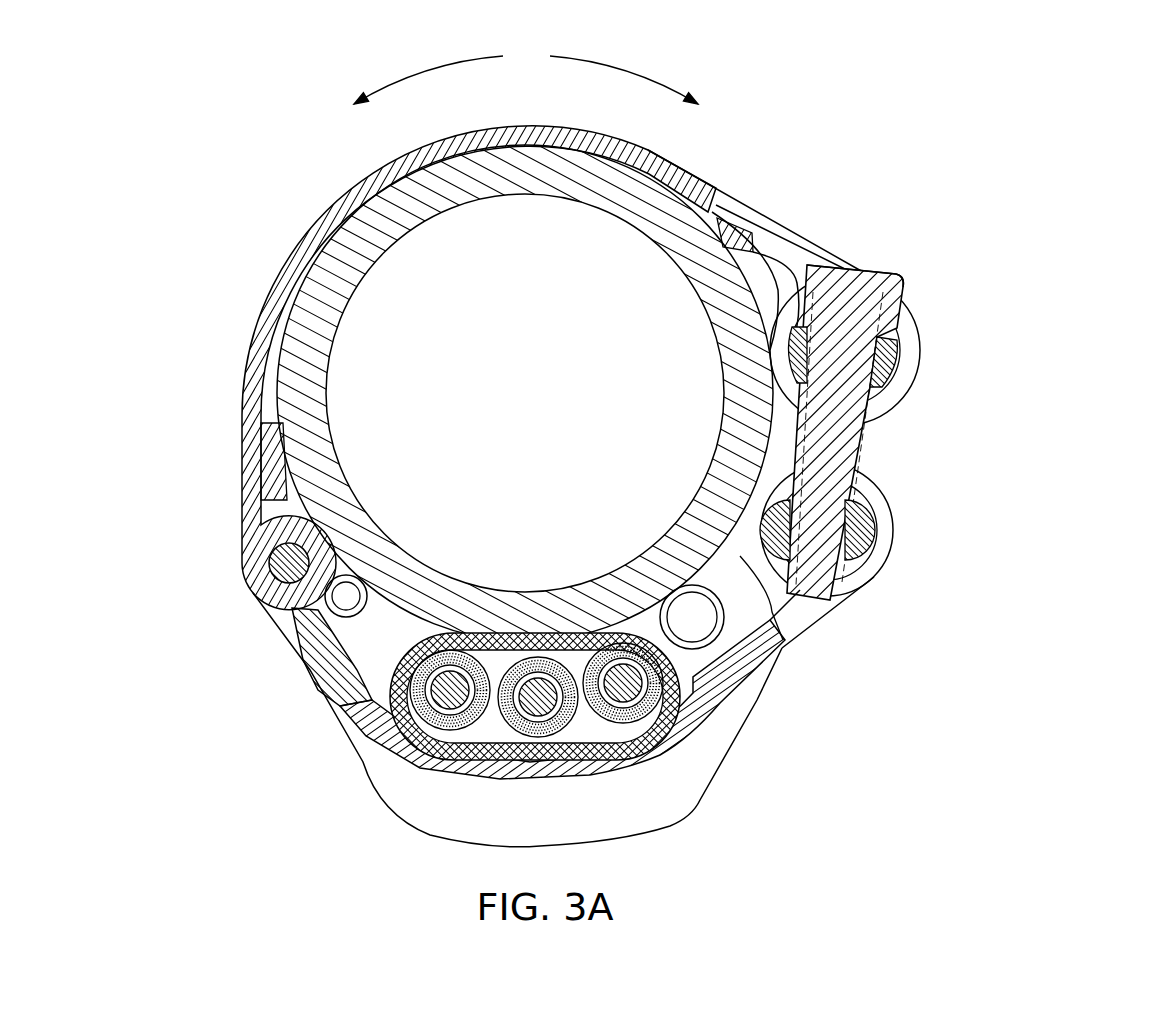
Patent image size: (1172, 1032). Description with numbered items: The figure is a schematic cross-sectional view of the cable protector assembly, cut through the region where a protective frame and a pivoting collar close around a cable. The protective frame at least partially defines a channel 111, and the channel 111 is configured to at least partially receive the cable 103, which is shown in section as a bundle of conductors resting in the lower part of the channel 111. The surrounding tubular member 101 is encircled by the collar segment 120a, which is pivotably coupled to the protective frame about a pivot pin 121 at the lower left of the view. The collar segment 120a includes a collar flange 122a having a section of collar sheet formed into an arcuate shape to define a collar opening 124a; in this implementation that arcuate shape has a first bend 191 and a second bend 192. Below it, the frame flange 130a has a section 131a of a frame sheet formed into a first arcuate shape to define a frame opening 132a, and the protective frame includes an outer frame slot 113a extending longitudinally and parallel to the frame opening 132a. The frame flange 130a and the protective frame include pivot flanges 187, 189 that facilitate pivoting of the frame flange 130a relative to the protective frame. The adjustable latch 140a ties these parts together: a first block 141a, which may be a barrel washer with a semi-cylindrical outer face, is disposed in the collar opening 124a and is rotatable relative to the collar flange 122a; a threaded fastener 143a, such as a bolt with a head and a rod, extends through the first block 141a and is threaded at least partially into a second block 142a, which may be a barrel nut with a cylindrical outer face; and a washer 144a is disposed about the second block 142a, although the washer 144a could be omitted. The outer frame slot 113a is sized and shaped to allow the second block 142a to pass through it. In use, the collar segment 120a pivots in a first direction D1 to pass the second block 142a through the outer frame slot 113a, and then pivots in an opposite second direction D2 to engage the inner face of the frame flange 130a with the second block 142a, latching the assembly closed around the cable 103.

The tubular body 101 is at (466, 178).
The cable 103 is at (475, 748).
The channel 111 is at (378, 650).
The outer frame slot 113a is at (862, 574).
The collar segment 120a is at (287, 258).
The pivot pin 121 is at (290, 567).
The collar flange 122a is at (930, 372).
The collar opening 124a is at (922, 332).
The frame flange 130a is at (895, 560).
The section of a frame sheet 131a is at (893, 515).
The frame opening 132a is at (768, 548).
The adjustable latch 140a is at (872, 455).
The first block 141a is at (797, 357).
The second block 142a is at (778, 528).
The threaded fastener 143a is at (857, 285).
The washer 144a is at (805, 566).
The pivot flange 187 is at (264, 600).
The pivot flange 189 is at (315, 660).
The first bend 191 is at (885, 428).
The second bend 192 is at (777, 285).
The first direction D1 is at (647, 75).
The second direction D2 is at (410, 75).